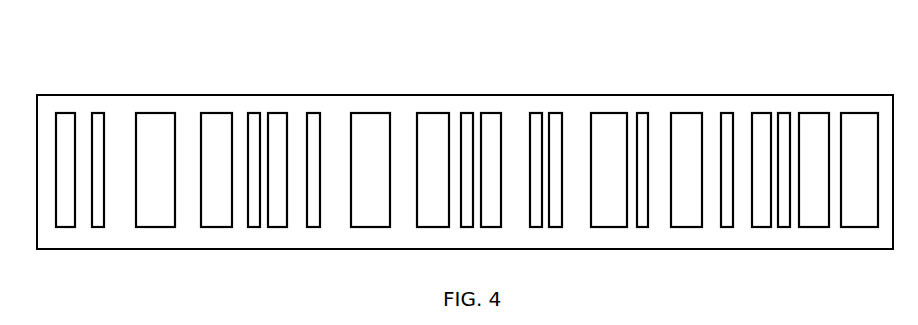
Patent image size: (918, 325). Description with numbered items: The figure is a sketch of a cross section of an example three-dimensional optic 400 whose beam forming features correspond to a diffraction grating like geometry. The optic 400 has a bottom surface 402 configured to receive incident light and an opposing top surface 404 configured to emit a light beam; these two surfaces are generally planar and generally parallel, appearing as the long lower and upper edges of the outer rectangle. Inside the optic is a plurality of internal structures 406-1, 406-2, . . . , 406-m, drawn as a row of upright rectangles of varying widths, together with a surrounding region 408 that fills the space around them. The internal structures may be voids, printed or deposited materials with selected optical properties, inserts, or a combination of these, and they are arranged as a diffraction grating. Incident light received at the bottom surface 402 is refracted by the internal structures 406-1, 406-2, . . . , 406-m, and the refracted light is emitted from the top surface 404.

The 3-D optic 400 is at (456, 148).
The bottom surface 402 is at (394, 255).
The top surface 404 is at (401, 89).
The internal structure 406-1 is at (67, 205).
The internal structure 406-2 is at (100, 132).
The internal structure 406-m is at (863, 218).
The surrounding region 408 is at (573, 110).